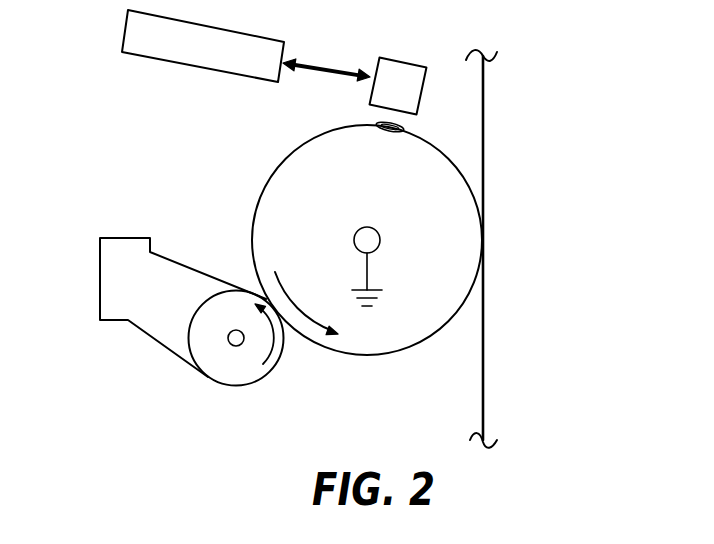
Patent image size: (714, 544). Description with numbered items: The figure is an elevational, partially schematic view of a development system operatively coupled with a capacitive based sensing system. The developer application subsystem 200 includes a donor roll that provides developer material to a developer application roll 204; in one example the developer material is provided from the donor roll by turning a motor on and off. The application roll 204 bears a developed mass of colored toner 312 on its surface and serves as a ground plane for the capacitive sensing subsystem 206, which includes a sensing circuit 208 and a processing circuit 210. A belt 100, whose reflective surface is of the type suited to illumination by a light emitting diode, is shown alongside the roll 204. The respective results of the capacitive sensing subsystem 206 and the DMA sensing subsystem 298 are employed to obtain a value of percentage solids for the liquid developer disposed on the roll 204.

The belt 100 is at (485, 164).
The developer application subsystem 200 is at (146, 189).
The developer application roll 204 is at (278, 170).
The capacitive sensing subsystem 206 is at (372, 41).
The DMA sensing subsystem 298 is at (438, 68).
The sensing circuit 208 is at (424, 126).
The processing circuit 210 is at (200, 68).
The developed mass of colored toner 312 is at (379, 125).